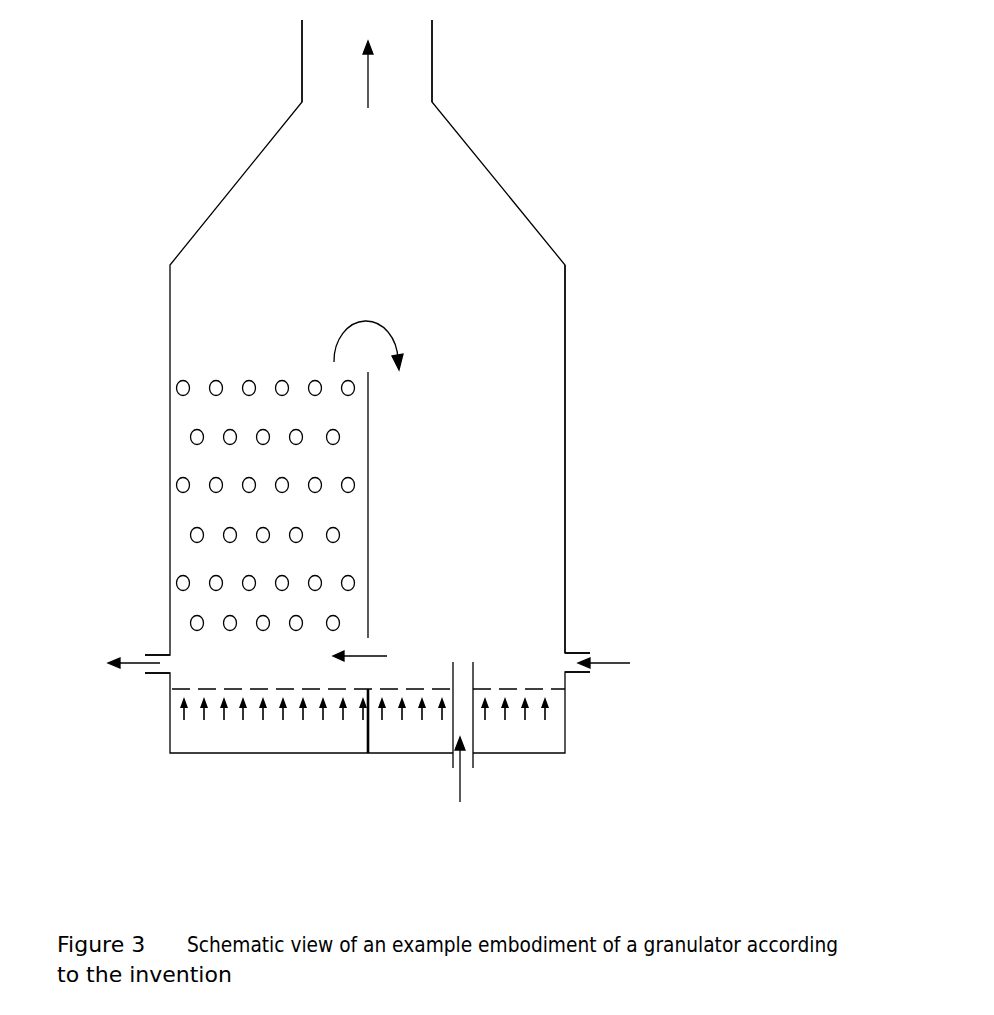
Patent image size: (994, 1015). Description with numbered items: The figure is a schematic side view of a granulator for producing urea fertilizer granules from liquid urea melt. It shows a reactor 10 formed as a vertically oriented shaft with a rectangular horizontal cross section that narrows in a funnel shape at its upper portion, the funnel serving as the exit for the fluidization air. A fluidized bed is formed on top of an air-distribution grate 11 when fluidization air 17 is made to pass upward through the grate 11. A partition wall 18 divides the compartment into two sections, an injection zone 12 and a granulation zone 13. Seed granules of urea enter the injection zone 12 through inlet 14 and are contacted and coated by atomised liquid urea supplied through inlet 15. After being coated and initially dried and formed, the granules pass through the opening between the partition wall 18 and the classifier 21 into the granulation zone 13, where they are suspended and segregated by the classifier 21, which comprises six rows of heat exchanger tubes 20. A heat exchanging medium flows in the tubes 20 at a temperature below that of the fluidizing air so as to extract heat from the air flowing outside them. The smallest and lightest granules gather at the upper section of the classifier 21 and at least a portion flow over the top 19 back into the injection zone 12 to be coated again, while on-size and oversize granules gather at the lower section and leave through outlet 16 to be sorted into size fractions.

The reactor 10 is at (367, 97).
The air-distribution grate 11 is at (552, 688).
The injection zone 12 is at (449, 463).
The granulation zone 13 is at (230, 506).
The inlet 14 is at (616, 659).
The inlet 15 is at (465, 758).
The outlet 16 is at (120, 662).
The fluidization air 17 is at (252, 712).
The partition wall 18 is at (368, 753).
The top of the classifier 19 is at (368, 324).
The heat exchanger tubes 20 is at (212, 396).
The classifier 21 is at (392, 505).